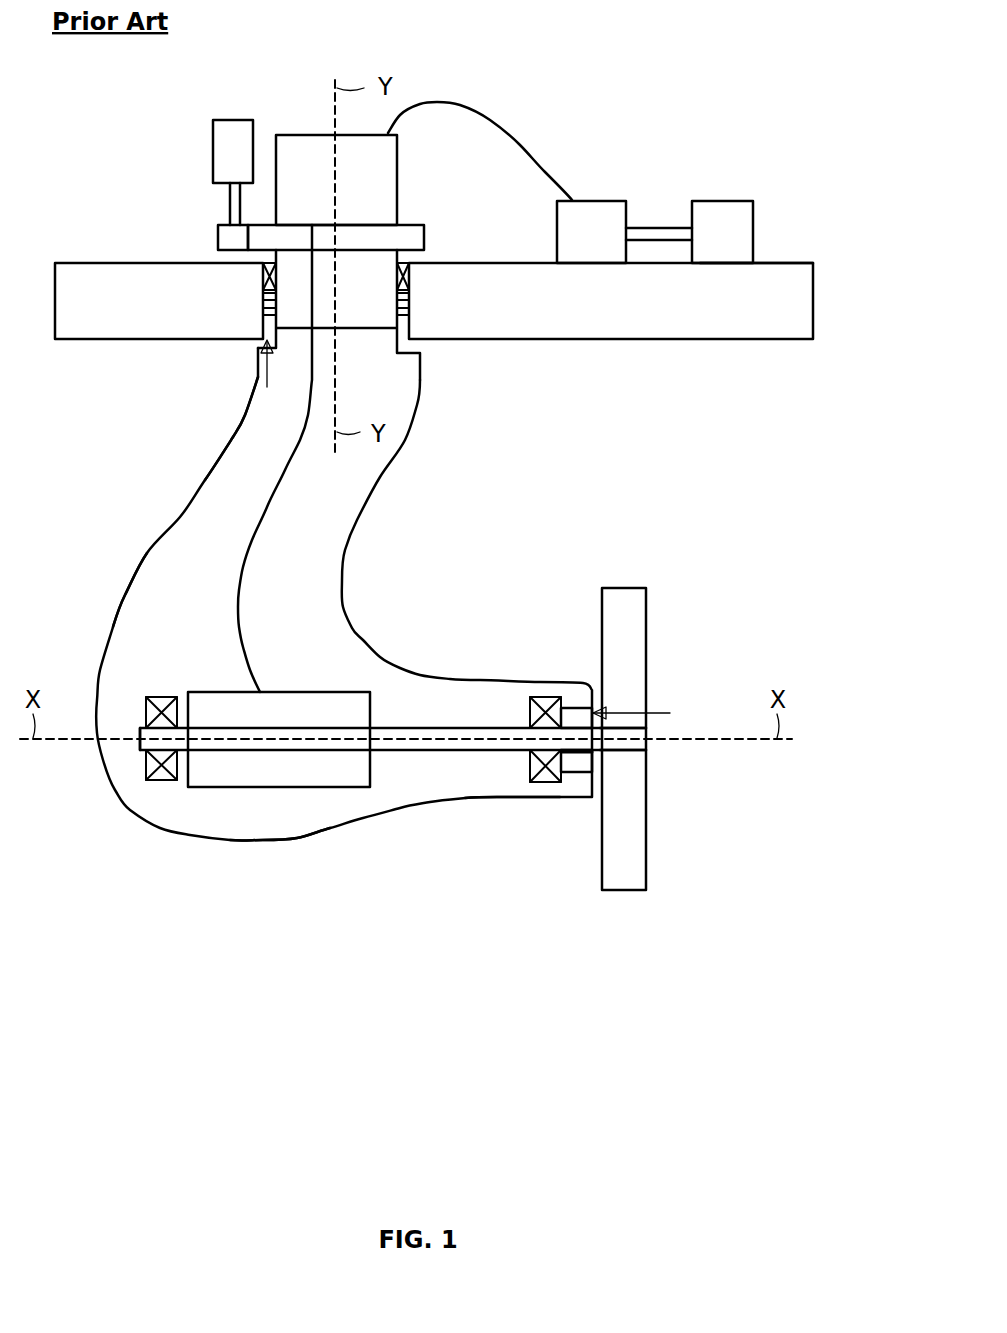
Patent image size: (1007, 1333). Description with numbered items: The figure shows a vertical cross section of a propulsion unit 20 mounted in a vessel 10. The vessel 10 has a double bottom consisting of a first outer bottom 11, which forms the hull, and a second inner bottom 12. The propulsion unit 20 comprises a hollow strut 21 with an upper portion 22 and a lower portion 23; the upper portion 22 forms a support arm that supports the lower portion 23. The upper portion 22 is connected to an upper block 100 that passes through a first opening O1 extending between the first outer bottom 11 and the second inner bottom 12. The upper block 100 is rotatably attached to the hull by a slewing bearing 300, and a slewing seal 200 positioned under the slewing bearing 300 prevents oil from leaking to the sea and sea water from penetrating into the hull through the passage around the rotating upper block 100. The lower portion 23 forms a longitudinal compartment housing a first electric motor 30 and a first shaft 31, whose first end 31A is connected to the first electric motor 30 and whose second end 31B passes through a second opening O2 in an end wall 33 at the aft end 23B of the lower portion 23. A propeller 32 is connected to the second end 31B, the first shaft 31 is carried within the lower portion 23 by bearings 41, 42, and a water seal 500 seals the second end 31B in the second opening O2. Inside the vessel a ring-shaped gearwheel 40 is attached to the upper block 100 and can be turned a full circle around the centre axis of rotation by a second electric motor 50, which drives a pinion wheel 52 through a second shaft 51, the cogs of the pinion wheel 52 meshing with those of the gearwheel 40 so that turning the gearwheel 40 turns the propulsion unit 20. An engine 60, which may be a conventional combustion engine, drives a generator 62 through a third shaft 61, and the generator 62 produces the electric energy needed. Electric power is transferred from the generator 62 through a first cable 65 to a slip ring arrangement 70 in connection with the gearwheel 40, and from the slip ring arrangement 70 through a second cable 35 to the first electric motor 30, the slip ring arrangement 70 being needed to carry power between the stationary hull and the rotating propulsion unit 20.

The vessel 10 is at (685, 57).
The first outer bottom 11 is at (761, 341).
The second inner bottom 12 is at (777, 262).
The propulsion unit 20 is at (122, 507).
The strut 21 is at (130, 590).
The upper portion 22 is at (233, 440).
The lower portion 23 is at (295, 825).
The aft end 23B is at (509, 790).
The first electric motor 30 is at (308, 705).
The first shaft 31 is at (462, 733).
The first end 31A is at (147, 743).
The second end 31B is at (643, 745).
The propeller 32 is at (633, 595).
The end wall 33 is at (597, 683).
The second cable 35 is at (238, 625).
The gearwheel 40 is at (416, 225).
The bearing 41 is at (546, 705).
The bearing 42 is at (160, 773).
The second electric motor 50 is at (233, 145).
The second shaft 51 is at (233, 203).
The pinion wheel 52 is at (233, 239).
The engine 60 is at (720, 213).
The third shaft 61 is at (657, 235).
The generator 62 is at (587, 213).
The first cable 65 is at (507, 133).
The slip ring arrangement 70 is at (298, 142).
The upper block 100 is at (339, 315).
The slewing seal 200 is at (410, 307).
The slewing bearing 300 is at (410, 277).
The water seal 500 is at (570, 760).
The first opening O1 is at (274, 378).
The second opening O2 is at (653, 714).